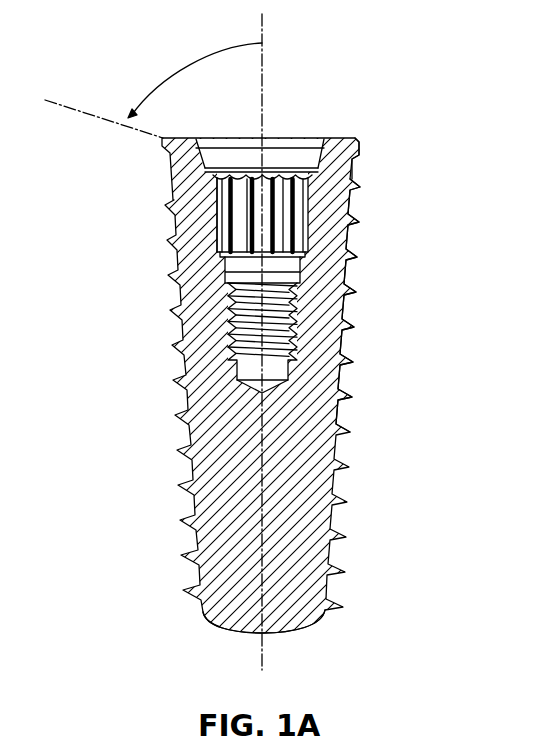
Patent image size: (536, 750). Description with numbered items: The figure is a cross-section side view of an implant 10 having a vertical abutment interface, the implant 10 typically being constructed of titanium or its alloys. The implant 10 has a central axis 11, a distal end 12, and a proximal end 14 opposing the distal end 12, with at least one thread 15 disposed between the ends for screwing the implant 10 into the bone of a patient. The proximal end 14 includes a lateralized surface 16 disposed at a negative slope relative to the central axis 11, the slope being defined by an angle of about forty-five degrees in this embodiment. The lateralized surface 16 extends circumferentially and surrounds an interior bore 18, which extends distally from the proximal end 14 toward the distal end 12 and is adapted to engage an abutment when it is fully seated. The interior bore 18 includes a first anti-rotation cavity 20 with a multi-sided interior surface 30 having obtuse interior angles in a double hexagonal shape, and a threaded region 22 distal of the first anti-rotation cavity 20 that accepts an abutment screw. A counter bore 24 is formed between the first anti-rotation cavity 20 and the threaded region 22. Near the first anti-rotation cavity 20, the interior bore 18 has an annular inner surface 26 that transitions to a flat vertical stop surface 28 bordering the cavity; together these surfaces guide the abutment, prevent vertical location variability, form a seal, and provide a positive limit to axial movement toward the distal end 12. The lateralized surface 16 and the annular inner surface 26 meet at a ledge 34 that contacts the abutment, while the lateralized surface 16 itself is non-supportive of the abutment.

The implant 10 is at (380, 462).
The central axis 11 is at (262, 652).
The distal end 12 is at (313, 640).
The proximal end 14 is at (250, 128).
The thread 15 is at (363, 312).
The lateralized surface 16 is at (332, 137).
The interior bore 18 is at (284, 158).
The first anti-rotation cavity 20 is at (283, 228).
The threaded region 22 is at (295, 335).
The counter bore 24 is at (228, 289).
The annular inner surface 26 is at (322, 161).
The flat vertical stop surface 28 is at (313, 168).
The multi-sided interior surface 30 is at (225, 218).
The ledge 34 is at (320, 140).